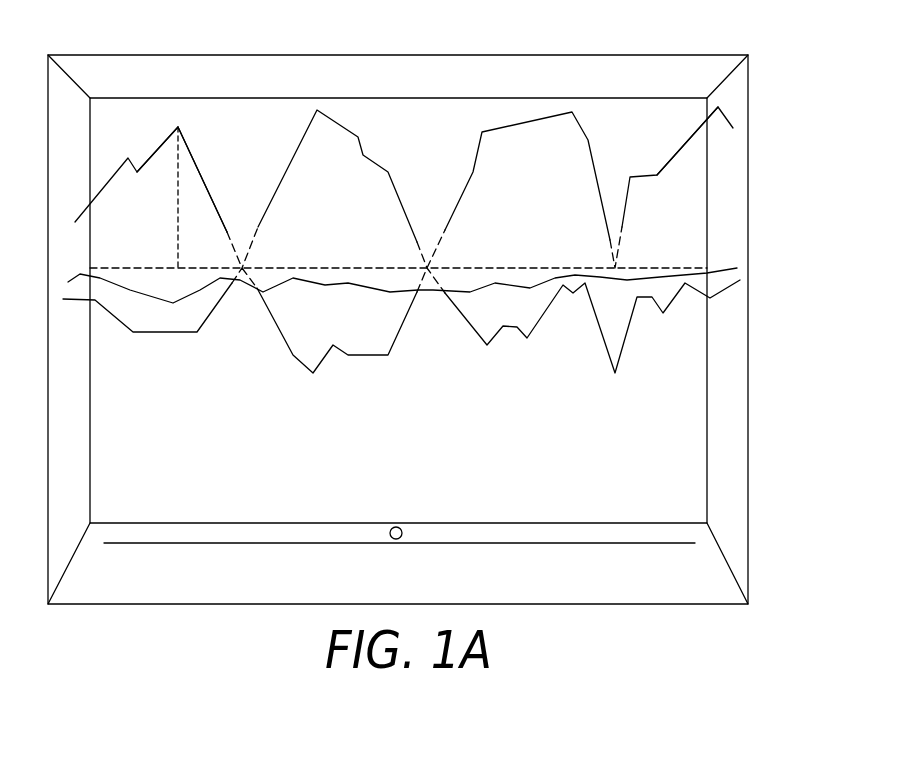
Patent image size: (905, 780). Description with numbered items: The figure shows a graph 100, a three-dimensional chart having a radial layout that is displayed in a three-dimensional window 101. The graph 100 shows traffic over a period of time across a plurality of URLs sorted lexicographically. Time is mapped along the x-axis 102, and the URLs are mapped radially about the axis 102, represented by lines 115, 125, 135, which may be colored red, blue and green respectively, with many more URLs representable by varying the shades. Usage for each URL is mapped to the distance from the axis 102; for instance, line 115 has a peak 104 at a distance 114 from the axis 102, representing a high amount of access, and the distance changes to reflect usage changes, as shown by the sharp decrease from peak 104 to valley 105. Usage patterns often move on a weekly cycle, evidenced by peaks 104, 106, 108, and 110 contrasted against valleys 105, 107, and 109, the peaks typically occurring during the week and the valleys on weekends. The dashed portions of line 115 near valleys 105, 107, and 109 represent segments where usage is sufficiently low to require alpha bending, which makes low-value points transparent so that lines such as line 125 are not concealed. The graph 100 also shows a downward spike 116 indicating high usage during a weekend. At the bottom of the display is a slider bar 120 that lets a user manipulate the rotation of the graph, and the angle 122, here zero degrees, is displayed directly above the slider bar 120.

The graph 100 is at (580, 36).
The three-dimensional window 101 is at (73, 168).
The x-axis 102 is at (108, 270).
The peak 104 is at (179, 126).
The valley 105 is at (240, 243).
The peak 106 is at (317, 110).
The valley 107 is at (424, 242).
The peak 108 is at (573, 112).
The valley 109 is at (613, 208).
The peak 110 is at (717, 108).
The distance 114 is at (175, 165).
The line 115 is at (698, 128).
The downward spike 116 is at (615, 372).
The slider bar 120 is at (397, 562).
The angle 122 is at (401, 528).
The line 125 is at (645, 278).
The line 135 is at (368, 356).